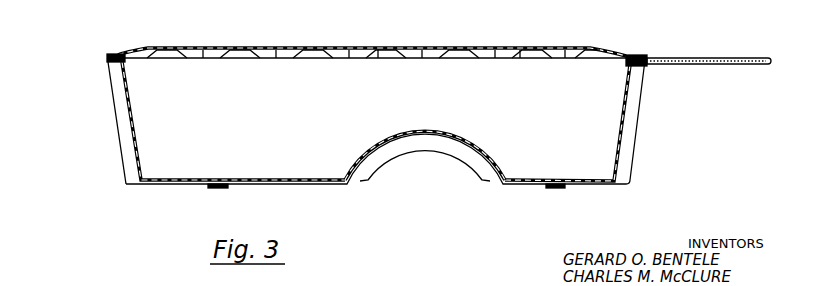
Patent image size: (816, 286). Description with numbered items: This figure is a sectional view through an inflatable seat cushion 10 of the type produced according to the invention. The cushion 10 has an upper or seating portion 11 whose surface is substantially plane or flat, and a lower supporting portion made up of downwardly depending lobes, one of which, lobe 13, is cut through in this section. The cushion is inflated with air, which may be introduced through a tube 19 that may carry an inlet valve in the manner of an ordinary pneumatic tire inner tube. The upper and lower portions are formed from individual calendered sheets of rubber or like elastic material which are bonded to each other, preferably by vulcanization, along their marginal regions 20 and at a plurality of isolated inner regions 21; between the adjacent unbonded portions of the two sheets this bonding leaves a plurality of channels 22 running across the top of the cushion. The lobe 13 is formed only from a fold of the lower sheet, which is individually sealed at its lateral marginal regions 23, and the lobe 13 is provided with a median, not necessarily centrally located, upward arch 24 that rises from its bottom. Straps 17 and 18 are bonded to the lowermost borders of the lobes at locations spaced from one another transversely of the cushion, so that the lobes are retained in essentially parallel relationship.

The seat cushion 10 is at (667, 121).
The upper or seating portion 11 is at (257, 32).
The lobe 13 is at (147, 140).
The strap 17 is at (217, 188).
The strap 18 is at (550, 188).
The tube 19 is at (700, 50).
The marginal regions 20 is at (117, 54).
The isolated inner regions 21 is at (385, 33).
The channels 22 is at (200, 57).
The lateral marginal regions 23 is at (120, 108).
The upward arch 24 is at (385, 157).